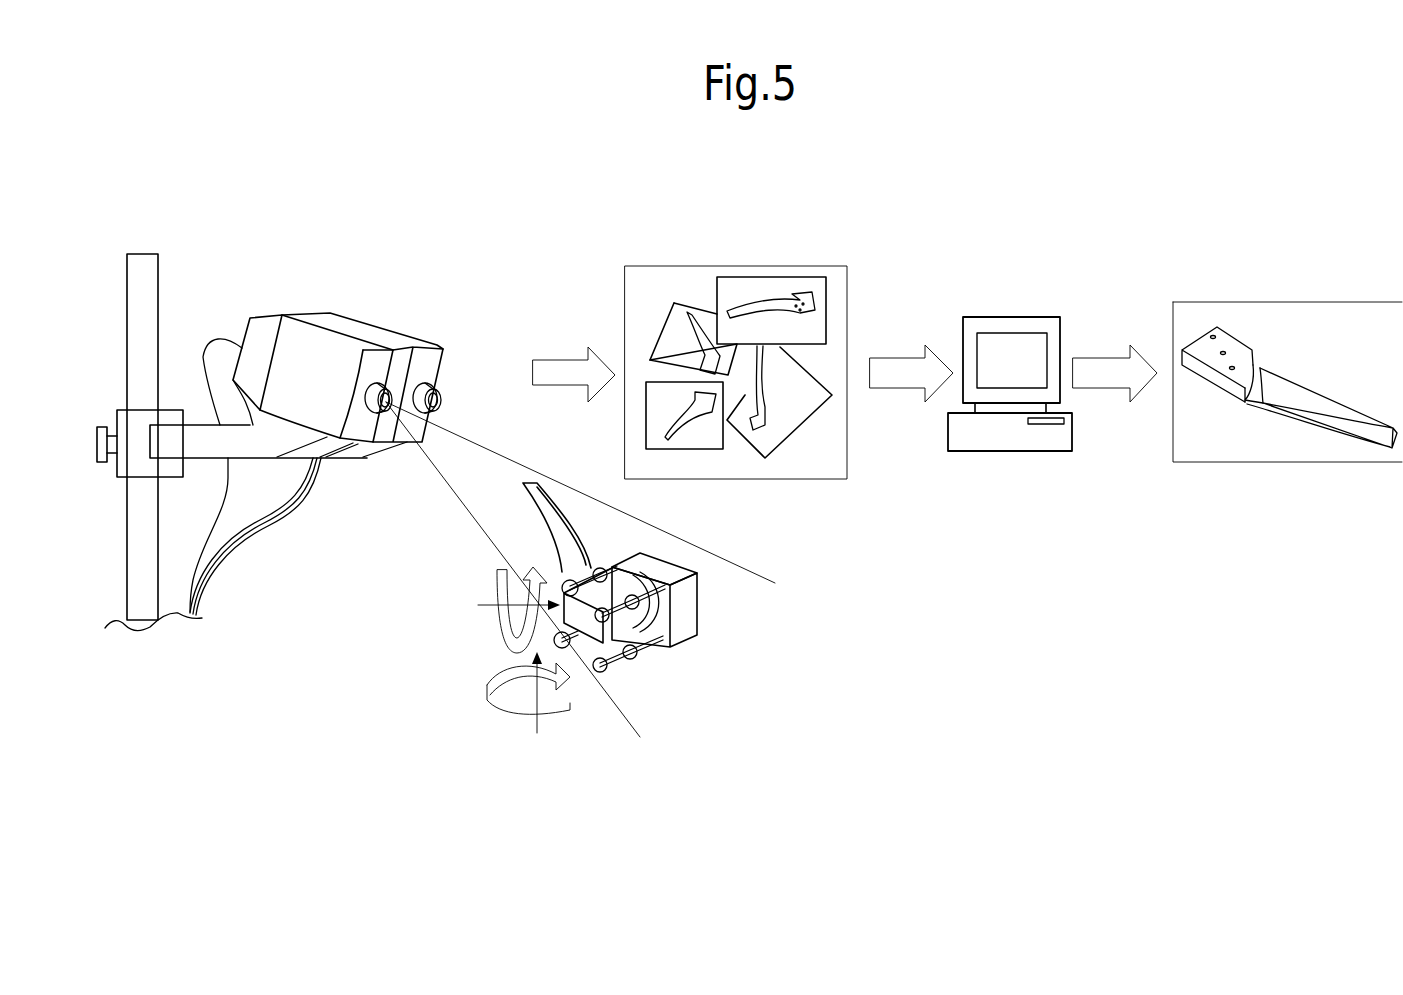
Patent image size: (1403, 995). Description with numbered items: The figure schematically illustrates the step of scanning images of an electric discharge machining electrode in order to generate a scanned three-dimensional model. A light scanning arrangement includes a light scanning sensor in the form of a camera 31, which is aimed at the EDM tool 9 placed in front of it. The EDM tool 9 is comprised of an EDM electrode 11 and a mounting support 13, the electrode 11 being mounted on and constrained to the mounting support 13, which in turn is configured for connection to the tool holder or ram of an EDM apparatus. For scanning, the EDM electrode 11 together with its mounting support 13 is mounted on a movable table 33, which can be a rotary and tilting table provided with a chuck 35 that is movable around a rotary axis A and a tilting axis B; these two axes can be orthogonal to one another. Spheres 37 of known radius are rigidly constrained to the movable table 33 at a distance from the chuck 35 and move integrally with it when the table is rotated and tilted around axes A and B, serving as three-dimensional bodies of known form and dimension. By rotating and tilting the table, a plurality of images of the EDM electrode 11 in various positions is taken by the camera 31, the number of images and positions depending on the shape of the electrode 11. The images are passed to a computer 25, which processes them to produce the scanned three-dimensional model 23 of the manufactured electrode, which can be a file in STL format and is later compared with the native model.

The camera 31 is at (390, 305).
The EDM tool 9 is at (600, 486).
The EDM electrode 11 is at (527, 510).
The movable table 33 is at (735, 608).
The chuck 35 is at (688, 625).
The mounting support 13 is at (627, 627).
The spheres 37 is at (617, 670).
The computer 25 is at (1015, 286).
The scanned 3D-model 23 is at (1272, 282).
The rotary axis A is at (500, 623).
The tilting axis B is at (503, 703).